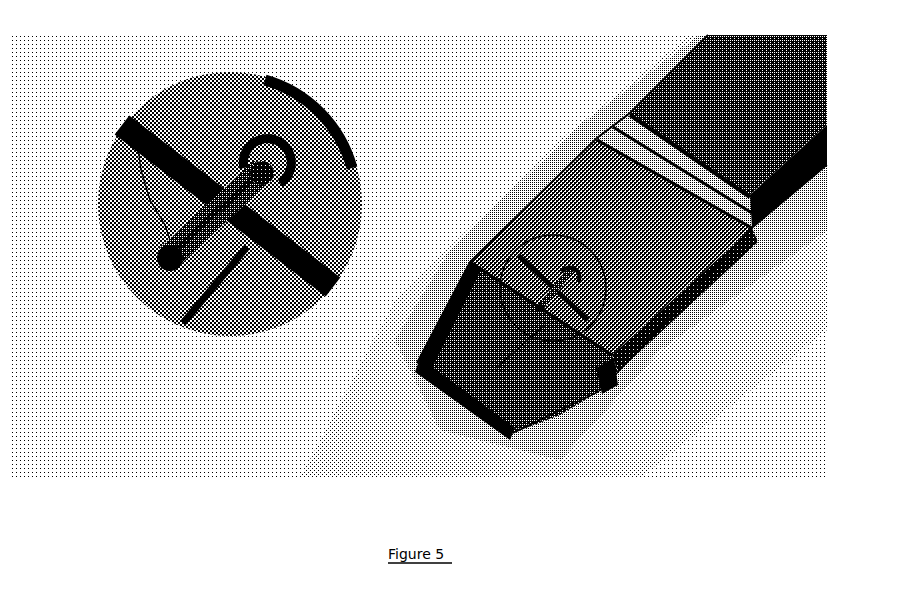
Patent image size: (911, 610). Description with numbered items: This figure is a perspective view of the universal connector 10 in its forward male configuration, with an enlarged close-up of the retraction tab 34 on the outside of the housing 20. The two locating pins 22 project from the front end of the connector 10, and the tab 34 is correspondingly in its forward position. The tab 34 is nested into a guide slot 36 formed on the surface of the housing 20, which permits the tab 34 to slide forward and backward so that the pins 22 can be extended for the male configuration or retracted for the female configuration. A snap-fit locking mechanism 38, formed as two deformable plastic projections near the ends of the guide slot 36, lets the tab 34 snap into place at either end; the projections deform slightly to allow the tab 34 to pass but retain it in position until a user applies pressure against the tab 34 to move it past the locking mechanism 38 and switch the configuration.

The universal connector 10 is at (508, 198).
The housing 20 is at (323, 108).
The locating pins 22 is at (477, 422).
The retraction tab 34 is at (128, 122).
The guide slot 36 is at (215, 250).
The snap-fit locking mechanism 38 is at (240, 183).